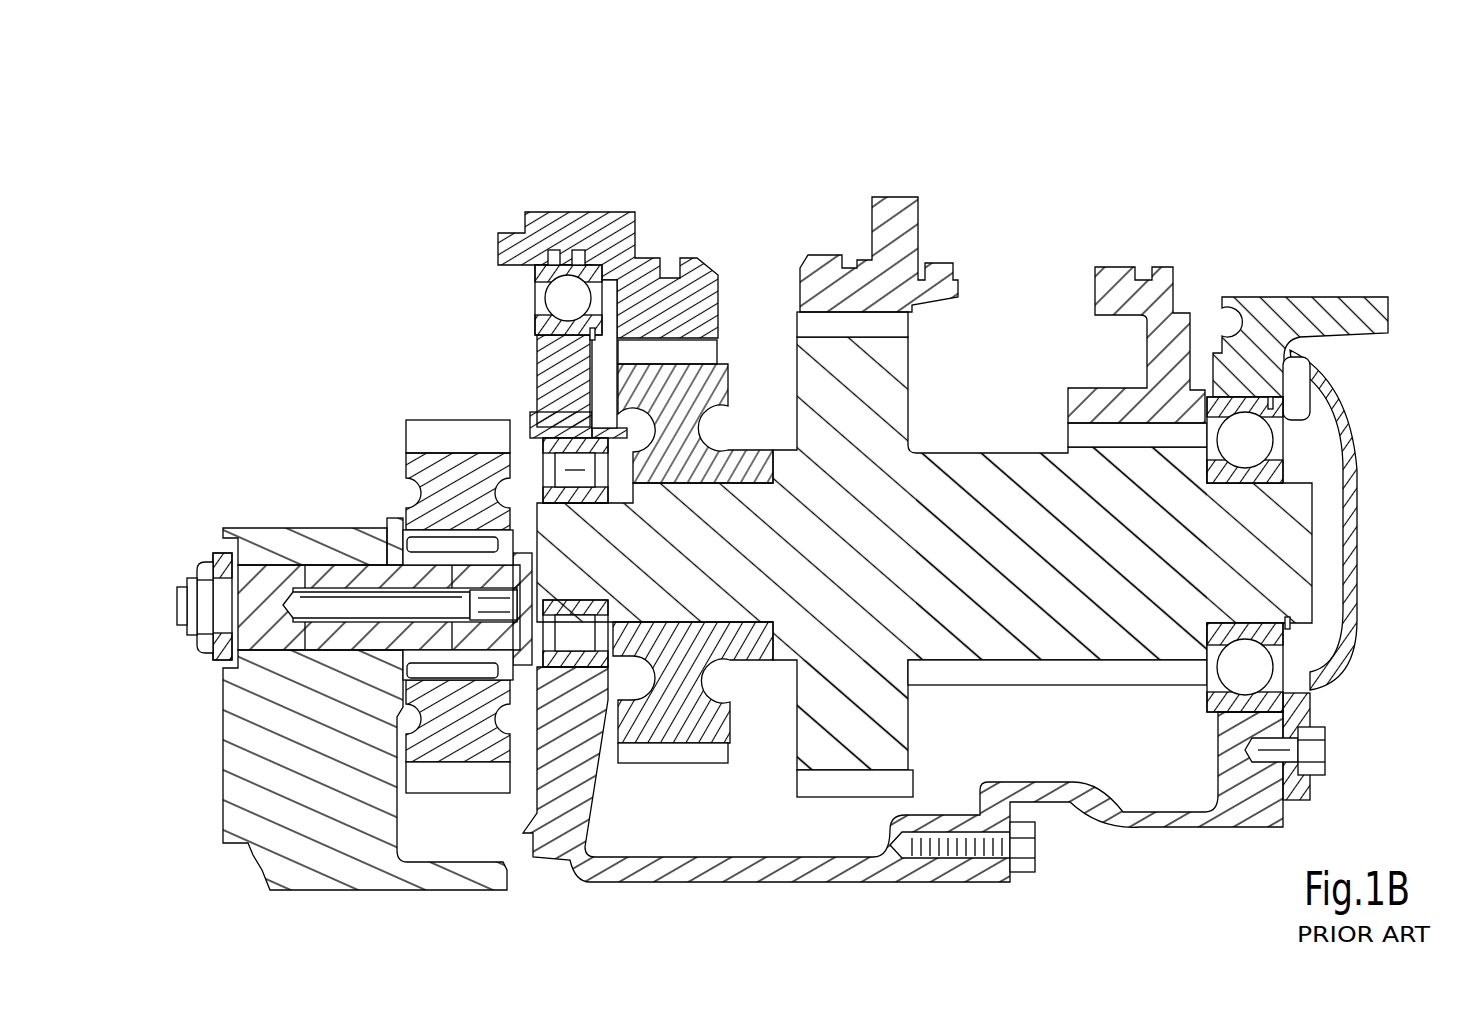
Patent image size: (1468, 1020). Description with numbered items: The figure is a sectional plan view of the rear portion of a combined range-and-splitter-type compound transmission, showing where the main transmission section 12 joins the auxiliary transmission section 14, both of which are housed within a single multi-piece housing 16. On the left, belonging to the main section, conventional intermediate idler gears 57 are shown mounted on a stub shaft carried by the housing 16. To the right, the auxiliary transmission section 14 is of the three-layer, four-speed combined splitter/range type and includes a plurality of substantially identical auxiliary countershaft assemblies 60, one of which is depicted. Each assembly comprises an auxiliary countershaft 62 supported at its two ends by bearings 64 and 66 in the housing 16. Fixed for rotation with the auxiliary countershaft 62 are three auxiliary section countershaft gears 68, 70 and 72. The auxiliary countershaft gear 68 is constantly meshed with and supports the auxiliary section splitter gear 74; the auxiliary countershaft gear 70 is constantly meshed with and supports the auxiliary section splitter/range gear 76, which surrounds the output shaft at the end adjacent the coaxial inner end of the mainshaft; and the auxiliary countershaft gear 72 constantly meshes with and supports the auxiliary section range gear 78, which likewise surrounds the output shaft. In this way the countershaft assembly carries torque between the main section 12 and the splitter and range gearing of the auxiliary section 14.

The main transmission section 12 is at (497, 125).
The auxiliary transmission section 14 is at (1415, 330).
The housing 16 is at (270, 787).
The intermediate idler gears 57 is at (450, 740).
The auxiliary countershaft assemblies 60 is at (973, 312).
The auxiliary countershaft 62 is at (1003, 610).
The bearing 64 is at (570, 462).
The bearing 66 is at (1255, 445).
The auxiliary section countershaft gear 68 is at (667, 717).
The auxiliary section countershaft gear 70 is at (868, 724).
The auxiliary section countershaft gear 72 is at (1128, 672).
The auxiliary section splitter gear 74 is at (703, 300).
The auxiliary section splitter/range gear 76 is at (810, 288).
The auxiliary section range gear 78 is at (1160, 298).